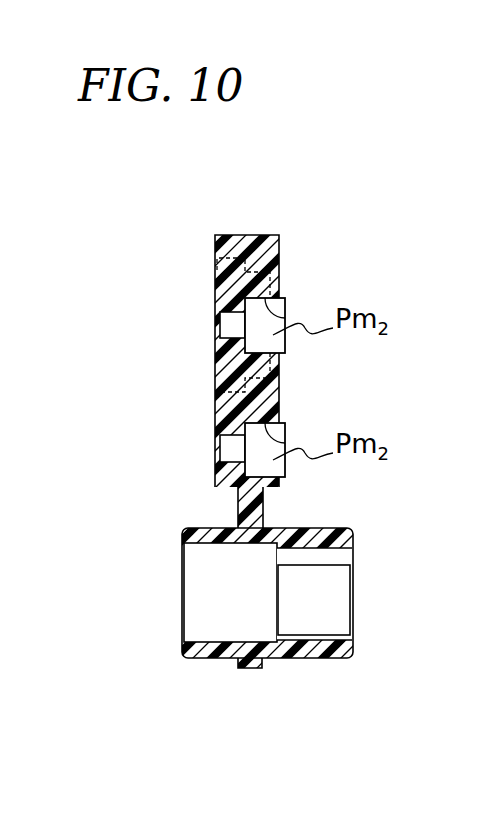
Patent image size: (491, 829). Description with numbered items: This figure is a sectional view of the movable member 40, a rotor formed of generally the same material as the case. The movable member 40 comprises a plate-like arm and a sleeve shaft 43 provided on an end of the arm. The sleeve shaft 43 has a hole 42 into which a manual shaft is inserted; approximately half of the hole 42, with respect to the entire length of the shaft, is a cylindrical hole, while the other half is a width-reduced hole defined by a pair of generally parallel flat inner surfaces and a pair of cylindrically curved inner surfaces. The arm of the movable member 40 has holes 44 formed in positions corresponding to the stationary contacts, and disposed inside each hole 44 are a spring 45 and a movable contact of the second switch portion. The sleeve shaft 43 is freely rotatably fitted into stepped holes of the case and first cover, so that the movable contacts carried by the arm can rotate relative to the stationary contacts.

The movable member 40 is at (253, 221).
The hole 42 is at (213, 615).
The sleeve shaft 43 is at (348, 543).
The holes 44 is at (268, 300).
The spring 45 is at (227, 322).